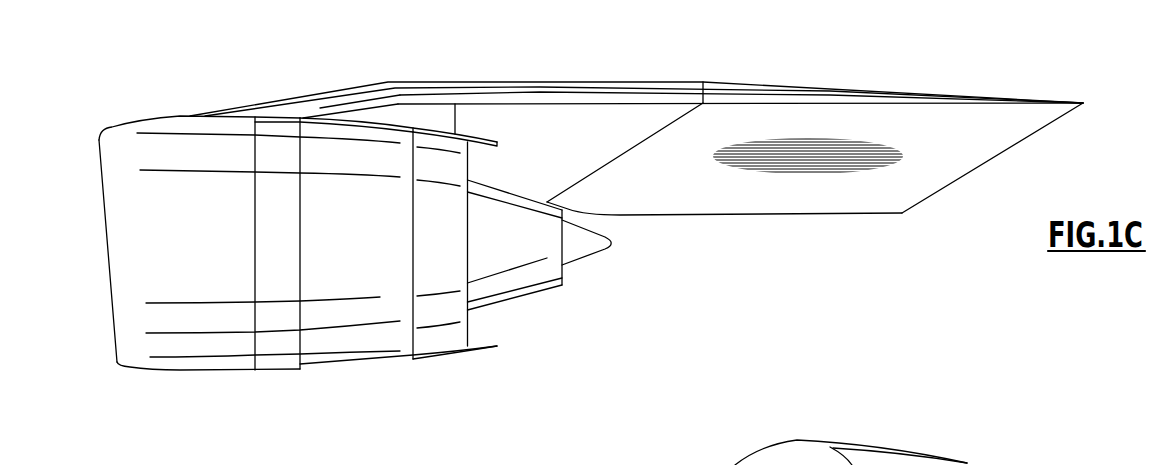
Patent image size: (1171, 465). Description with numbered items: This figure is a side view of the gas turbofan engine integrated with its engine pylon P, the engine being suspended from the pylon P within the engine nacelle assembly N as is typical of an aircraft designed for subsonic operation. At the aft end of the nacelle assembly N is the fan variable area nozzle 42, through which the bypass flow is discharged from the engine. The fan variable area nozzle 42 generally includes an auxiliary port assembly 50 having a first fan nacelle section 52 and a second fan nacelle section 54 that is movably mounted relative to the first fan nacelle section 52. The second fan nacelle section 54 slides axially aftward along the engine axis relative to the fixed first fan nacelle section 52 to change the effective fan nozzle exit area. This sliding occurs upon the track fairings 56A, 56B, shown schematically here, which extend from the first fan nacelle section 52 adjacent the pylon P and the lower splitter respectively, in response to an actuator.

The engine nacelle assembly N is at (210, 404).
The fan variable area nozzle 42 is at (437, 397).
The auxiliary port assembly 50 is at (422, 106).
The first fan nacelle section 52 is at (381, 354).
The second fan nacelle section 54 is at (455, 338).
The track fairing 56A is at (472, 137).
The track fairing 56B is at (485, 353).
The engine pylon P is at (782, 118).